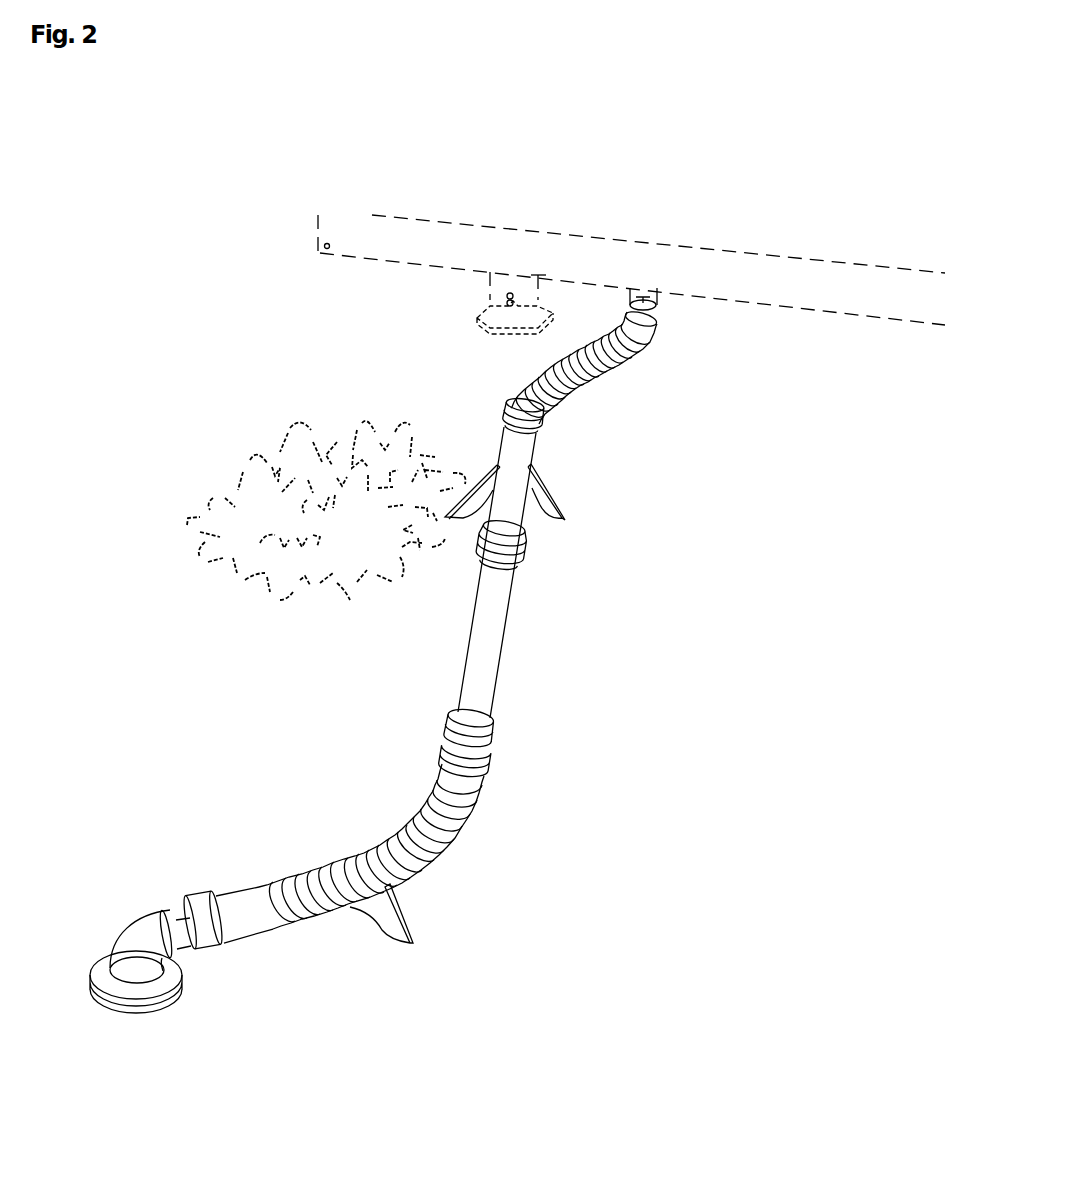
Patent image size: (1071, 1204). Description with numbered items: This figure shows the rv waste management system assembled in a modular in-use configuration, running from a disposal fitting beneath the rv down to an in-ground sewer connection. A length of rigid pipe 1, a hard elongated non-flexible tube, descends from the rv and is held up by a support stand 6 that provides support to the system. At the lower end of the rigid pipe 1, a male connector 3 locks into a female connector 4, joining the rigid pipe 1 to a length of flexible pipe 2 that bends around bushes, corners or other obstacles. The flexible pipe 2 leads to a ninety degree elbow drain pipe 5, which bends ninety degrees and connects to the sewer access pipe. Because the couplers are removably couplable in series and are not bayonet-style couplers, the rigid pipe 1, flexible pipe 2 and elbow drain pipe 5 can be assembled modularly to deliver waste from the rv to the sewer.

The rigid pipe 1 is at (490, 643).
The flexible pipe 2 is at (422, 852).
The male connector 3 is at (462, 720).
The female connector 4 is at (455, 752).
The 90 degree elbow drain pipe 5 is at (137, 958).
The support stand 6 is at (545, 505).